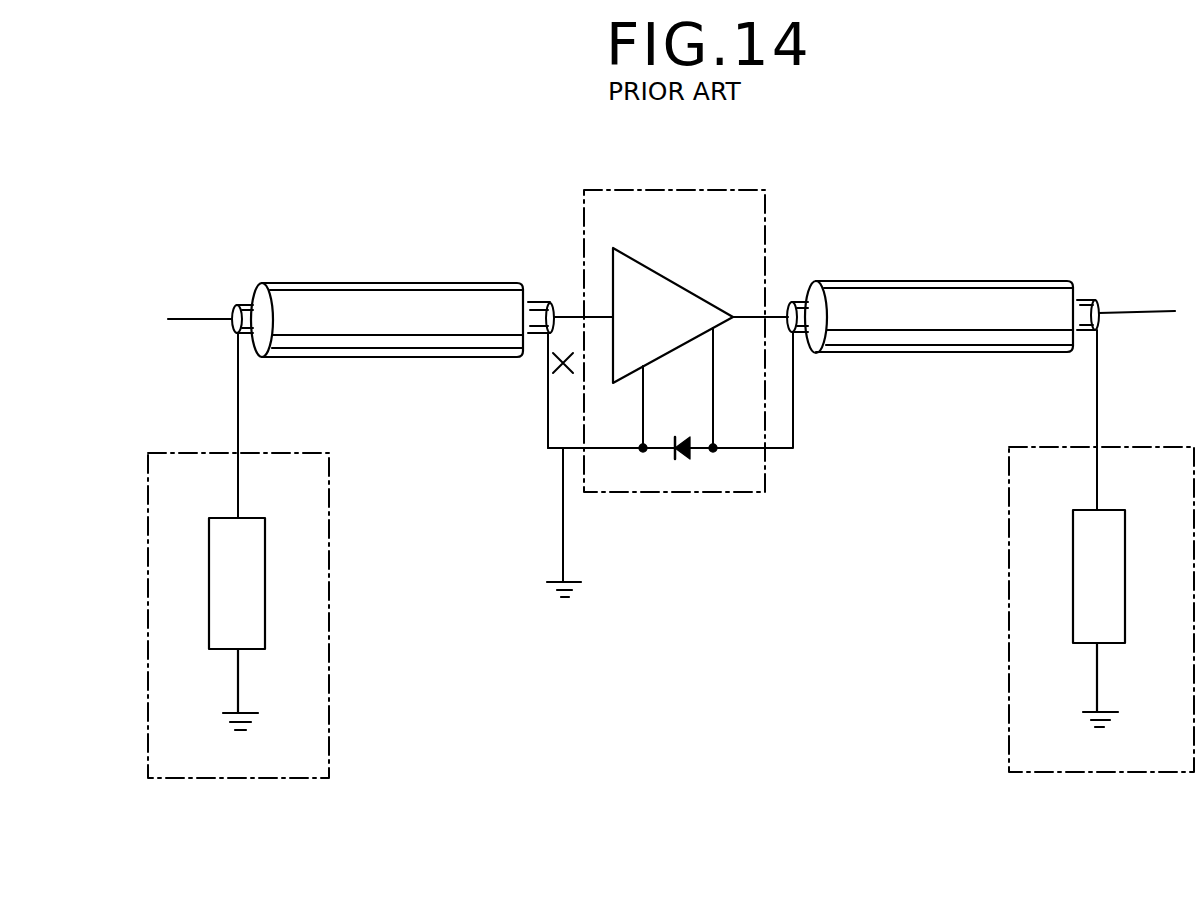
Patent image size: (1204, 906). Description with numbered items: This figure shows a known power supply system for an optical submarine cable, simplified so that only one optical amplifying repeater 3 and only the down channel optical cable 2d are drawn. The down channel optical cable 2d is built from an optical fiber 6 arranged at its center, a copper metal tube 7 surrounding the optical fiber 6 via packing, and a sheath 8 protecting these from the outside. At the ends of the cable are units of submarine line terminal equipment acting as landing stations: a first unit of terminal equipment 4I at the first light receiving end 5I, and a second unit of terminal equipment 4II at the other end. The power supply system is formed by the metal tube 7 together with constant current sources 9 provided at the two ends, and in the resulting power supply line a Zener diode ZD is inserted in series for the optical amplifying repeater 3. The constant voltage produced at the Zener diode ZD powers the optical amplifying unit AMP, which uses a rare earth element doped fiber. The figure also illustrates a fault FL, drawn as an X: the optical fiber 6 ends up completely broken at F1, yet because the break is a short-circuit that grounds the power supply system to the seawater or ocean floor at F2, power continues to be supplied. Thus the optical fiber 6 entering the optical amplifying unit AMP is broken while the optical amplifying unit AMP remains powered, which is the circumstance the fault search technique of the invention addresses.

The optical amplifying repeater 3 is at (672, 190).
The down channel optical cable 2d is at (380, 283).
The optical fiber 6 is at (185, 322).
The metal tube 7 is at (238, 303).
The sheath 8 is at (263, 292).
The constant current source 9 is at (250, 518).
The first unit of terminal equipment 4I is at (1140, 420).
The second unit of terminal equipment 4II is at (228, 452).
The first light receiving end 5I is at (1138, 250).
The fiber break point F1 is at (548, 302).
The ground fault point F2 is at (563, 450).
The fault FL is at (553, 368).
The Zener diode ZD is at (685, 455).
The optical amplifying unit AMP is at (695, 290).